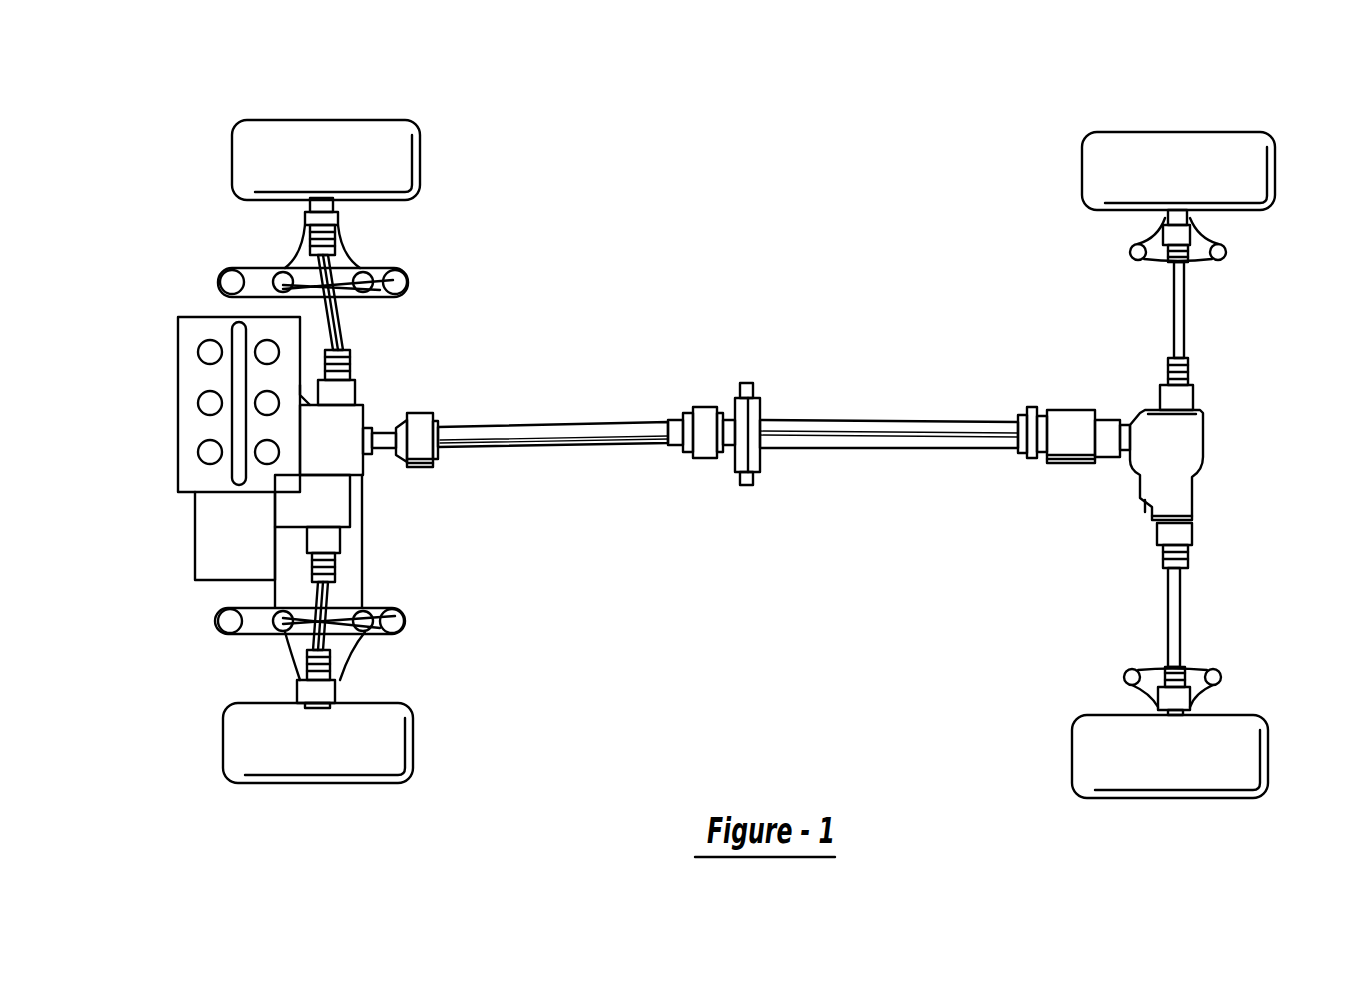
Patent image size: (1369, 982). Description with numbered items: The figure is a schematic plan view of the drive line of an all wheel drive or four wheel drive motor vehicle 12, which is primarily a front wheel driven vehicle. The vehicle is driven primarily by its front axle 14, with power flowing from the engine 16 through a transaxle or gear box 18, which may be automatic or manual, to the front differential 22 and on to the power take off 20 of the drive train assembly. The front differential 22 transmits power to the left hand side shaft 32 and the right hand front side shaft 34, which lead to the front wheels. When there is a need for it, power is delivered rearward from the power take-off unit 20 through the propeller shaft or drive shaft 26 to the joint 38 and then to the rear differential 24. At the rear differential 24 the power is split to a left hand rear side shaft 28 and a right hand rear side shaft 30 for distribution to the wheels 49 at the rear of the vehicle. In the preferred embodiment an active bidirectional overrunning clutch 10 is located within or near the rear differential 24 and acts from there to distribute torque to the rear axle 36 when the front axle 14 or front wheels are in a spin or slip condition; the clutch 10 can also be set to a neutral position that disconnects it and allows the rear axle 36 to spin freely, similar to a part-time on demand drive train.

The active bidirectional overrunning clutch 10 is at (1072, 410).
The motor vehicle 12 is at (637, 172).
The front axle 14 is at (335, 591).
The engine 16 is at (185, 440).
The gear box 18 is at (218, 545).
The power take off 20 is at (345, 432).
The front differential 22 is at (333, 515).
The rear differential 24 is at (1182, 438).
The propeller shaft 26 is at (850, 445).
The left hand rear side shaft 28 is at (1175, 623).
The right hand rear side shaft 30 is at (1183, 337).
The left hand side shaft 32 is at (357, 613).
The right hand front side shaft 34 is at (335, 290).
The rear axle 36 is at (1200, 546).
The joint 38 is at (423, 425).
The wheels 49 is at (1257, 167).